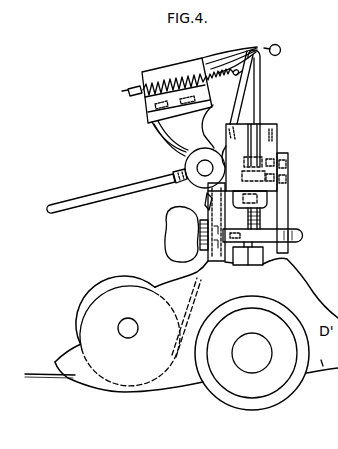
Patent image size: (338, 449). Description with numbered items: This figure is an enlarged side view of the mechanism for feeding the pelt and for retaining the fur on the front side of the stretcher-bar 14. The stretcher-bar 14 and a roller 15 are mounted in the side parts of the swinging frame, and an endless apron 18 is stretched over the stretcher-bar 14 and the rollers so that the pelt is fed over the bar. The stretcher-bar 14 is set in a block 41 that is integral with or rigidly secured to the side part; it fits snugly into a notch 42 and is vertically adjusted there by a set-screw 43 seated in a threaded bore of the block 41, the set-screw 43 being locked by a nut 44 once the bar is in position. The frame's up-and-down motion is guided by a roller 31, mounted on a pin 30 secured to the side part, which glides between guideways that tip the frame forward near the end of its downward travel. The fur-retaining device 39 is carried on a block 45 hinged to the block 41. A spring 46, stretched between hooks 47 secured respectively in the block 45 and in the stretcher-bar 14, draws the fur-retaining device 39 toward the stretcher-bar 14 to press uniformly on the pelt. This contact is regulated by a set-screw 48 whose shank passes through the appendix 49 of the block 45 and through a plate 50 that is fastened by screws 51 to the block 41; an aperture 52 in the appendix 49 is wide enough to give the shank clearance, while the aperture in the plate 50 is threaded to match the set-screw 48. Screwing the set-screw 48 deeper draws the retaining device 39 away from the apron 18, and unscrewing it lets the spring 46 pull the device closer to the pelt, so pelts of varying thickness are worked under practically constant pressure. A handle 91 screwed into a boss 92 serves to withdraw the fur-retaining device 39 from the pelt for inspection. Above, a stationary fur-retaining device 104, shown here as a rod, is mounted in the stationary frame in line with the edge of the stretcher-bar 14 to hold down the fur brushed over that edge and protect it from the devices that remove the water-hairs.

The stretcher-bar 14 is at (252, 93).
The roller 15 is at (196, 325).
The endless apron 18 is at (44, 375).
The pin 30 is at (252, 353).
The roller 31 is at (252, 353).
The fur-retaining device 39 is at (191, 78).
The block 41 is at (242, 157).
The notch 42 is at (251, 160).
The set-screw 43 is at (256, 258).
The nut 44 is at (267, 200).
The block 45 is at (160, 125).
The spring 46 is at (155, 90).
The hook 47 is at (133, 100).
The set-screw 48 is at (182, 235).
The appendix 49 is at (207, 207).
The plate 50 is at (289, 257).
The screw 51 is at (288, 169).
The aperture 52 is at (223, 262).
The handle 91 is at (90, 202).
The boss 92 is at (172, 172).
The stationary fur-retaining device 104 is at (281, 50).